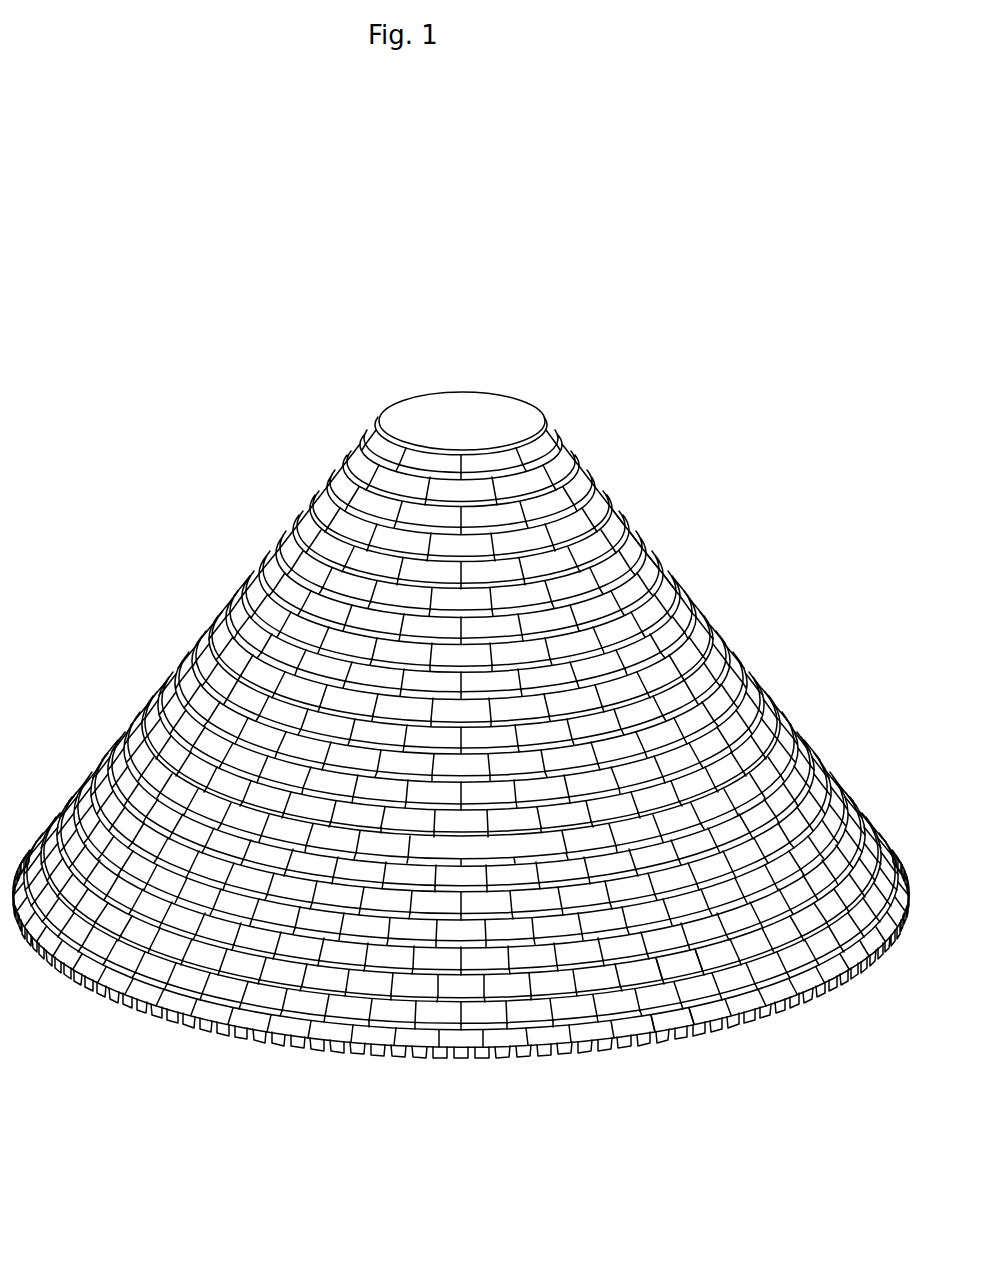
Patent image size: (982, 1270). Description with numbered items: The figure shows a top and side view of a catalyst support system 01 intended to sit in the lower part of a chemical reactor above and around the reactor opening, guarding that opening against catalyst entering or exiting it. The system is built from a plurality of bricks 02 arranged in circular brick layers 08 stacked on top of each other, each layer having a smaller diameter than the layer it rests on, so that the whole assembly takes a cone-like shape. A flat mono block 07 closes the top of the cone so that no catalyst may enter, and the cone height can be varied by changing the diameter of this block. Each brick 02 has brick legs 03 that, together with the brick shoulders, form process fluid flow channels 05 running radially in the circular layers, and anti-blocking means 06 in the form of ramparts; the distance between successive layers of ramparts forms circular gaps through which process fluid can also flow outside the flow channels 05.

The catalyst support system 01 is at (183, 146).
The brick 02 is at (276, 930).
The brick leg 03 is at (687, 1047).
The flow channel 05 is at (312, 1024).
The anti-blocking means 06 is at (199, 647).
The mono block 07 is at (479, 400).
The brick layer 08 is at (680, 538).